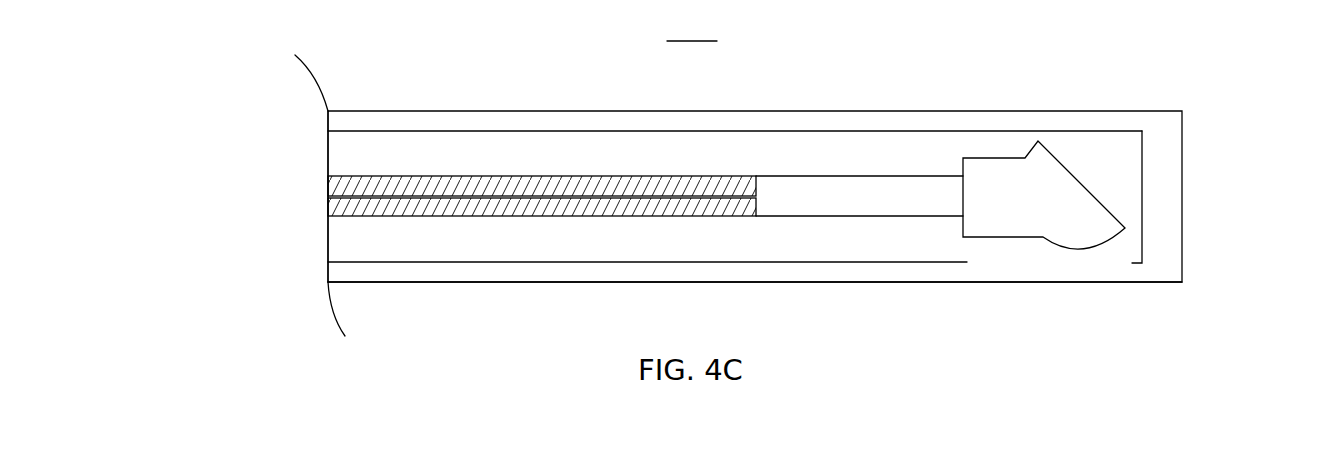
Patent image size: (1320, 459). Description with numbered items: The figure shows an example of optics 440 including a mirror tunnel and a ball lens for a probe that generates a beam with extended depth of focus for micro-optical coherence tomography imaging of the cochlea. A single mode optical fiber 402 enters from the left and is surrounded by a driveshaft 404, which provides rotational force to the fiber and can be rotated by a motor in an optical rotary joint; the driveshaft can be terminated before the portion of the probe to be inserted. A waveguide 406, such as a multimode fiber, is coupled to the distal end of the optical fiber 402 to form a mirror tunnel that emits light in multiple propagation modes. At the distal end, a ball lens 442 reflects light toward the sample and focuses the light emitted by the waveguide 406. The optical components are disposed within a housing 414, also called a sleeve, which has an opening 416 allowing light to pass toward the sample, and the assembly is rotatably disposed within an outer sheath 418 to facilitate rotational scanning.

The optics 440 is at (738, 175).
The single mode optical fiber 402 is at (318, 192).
The driveshaft 404 is at (456, 168).
The waveguide 406 is at (813, 168).
The ball lens 442 is at (1100, 175).
The opening 416 is at (1053, 282).
The housing 414 is at (594, 275).
The sheath 418 is at (405, 300).